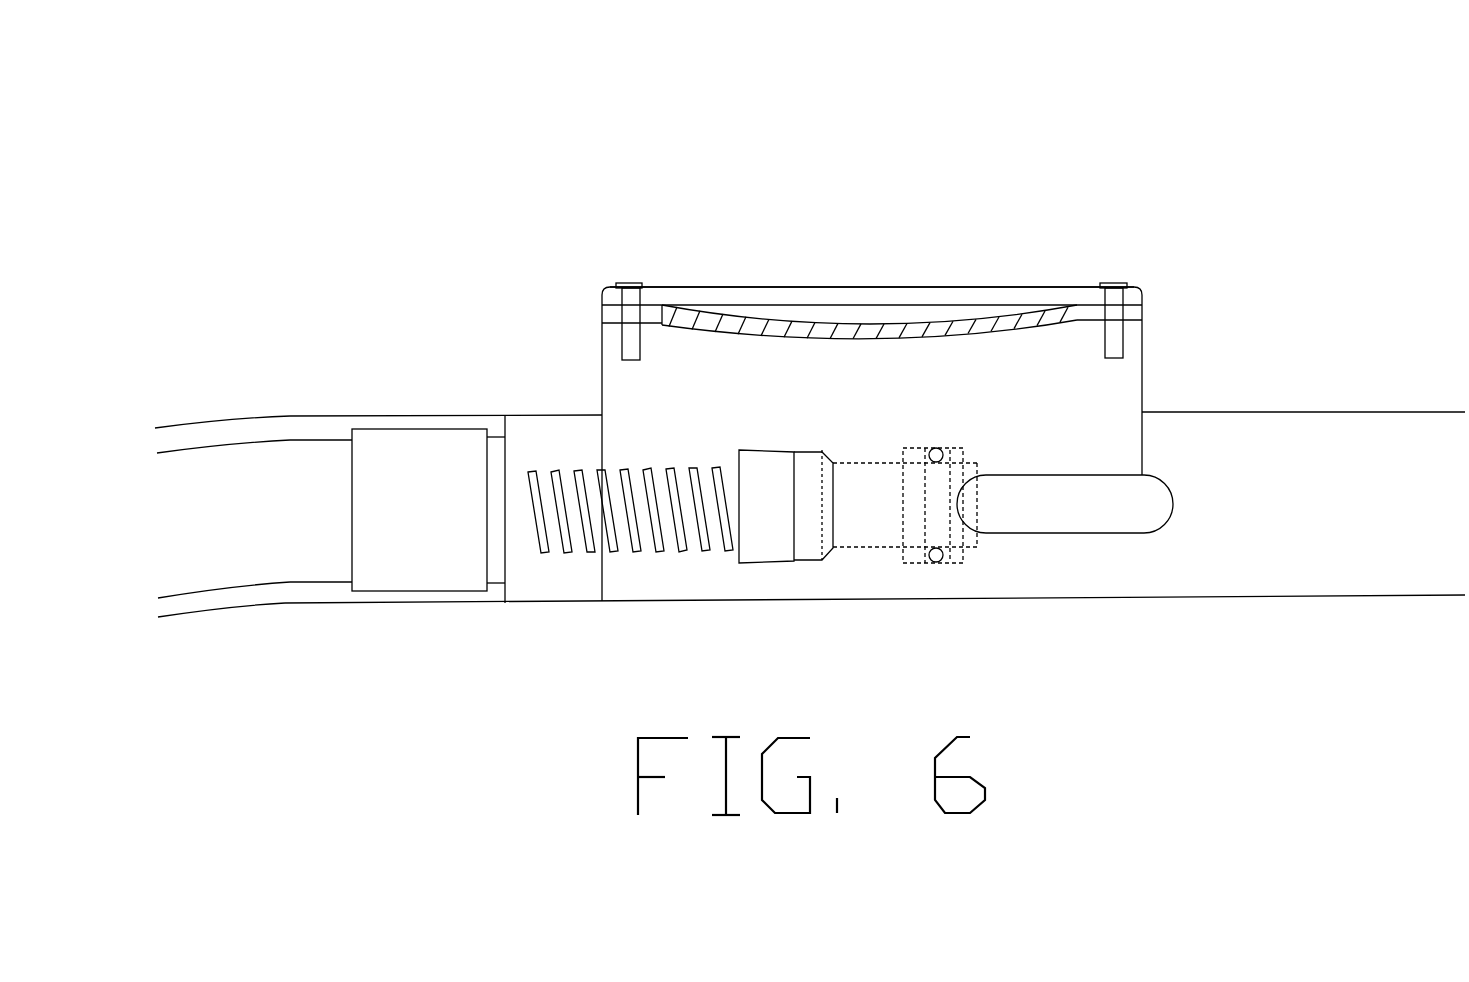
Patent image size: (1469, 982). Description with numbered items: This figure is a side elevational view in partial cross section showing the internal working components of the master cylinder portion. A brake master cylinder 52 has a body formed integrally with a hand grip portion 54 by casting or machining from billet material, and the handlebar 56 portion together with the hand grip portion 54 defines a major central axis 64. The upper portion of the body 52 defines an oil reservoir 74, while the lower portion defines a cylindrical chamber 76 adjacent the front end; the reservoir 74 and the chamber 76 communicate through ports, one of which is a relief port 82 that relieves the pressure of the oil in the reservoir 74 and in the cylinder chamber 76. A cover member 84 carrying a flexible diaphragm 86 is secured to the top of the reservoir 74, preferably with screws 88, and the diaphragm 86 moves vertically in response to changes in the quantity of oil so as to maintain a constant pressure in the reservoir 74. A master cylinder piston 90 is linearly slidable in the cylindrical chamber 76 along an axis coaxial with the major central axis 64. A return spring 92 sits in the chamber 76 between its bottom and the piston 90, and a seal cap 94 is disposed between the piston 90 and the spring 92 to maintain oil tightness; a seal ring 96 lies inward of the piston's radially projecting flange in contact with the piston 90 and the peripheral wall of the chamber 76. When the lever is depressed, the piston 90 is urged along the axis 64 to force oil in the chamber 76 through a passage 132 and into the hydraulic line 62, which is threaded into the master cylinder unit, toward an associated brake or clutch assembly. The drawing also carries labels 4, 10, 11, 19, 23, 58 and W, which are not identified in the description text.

The housing 4 is at (872, 378).
The cushion / pad 10 is at (1094, 438).
The inner wall 11 is at (352, 487).
The partition wall 19 is at (507, 416).
The lower frame member 23 is at (1238, 537).
The brake master cylinder 52 is at (806, 350).
The hand grip portion 54 is at (1290, 636).
The handlebar 56 is at (465, 420).
The block 58 is at (418, 592).
The hydraulic line 62 is at (810, 575).
The major central axis 64 is at (1300, 502).
The oil reservoir 74 is at (847, 382).
The cylindrical chamber 76 is at (687, 563).
The relief port 82 is at (758, 420).
The cover member 84 is at (883, 239).
The flexible diaphragm 86 is at (857, 312).
The screws 88 is at (943, 312).
The master cylinder piston 90 is at (905, 505).
The return spring 92 is at (572, 548).
The seal cap 94 is at (772, 518).
The seal ring 96 is at (1083, 386).
The passage 132 is at (466, 497).
The width W is at (1022, 593).